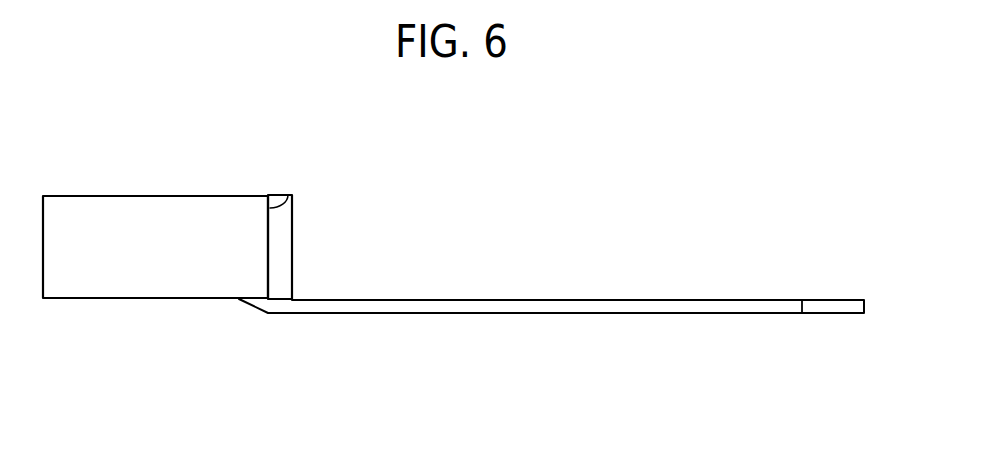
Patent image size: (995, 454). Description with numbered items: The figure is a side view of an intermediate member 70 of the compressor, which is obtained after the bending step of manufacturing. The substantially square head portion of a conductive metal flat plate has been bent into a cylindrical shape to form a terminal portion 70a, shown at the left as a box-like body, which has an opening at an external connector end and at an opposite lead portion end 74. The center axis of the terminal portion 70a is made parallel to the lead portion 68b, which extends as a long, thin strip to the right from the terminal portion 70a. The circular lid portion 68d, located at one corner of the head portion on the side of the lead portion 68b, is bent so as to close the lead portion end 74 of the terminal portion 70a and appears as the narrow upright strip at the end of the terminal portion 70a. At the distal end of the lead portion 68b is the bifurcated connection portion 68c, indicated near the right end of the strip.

The intermediate member 70 is at (406, 226).
The terminal portion 70a is at (169, 256).
The lead portion end 74 is at (288, 194).
The lid portion 68d is at (282, 245).
The lead portion 68b is at (629, 310).
The connection portion 68c is at (802, 303).